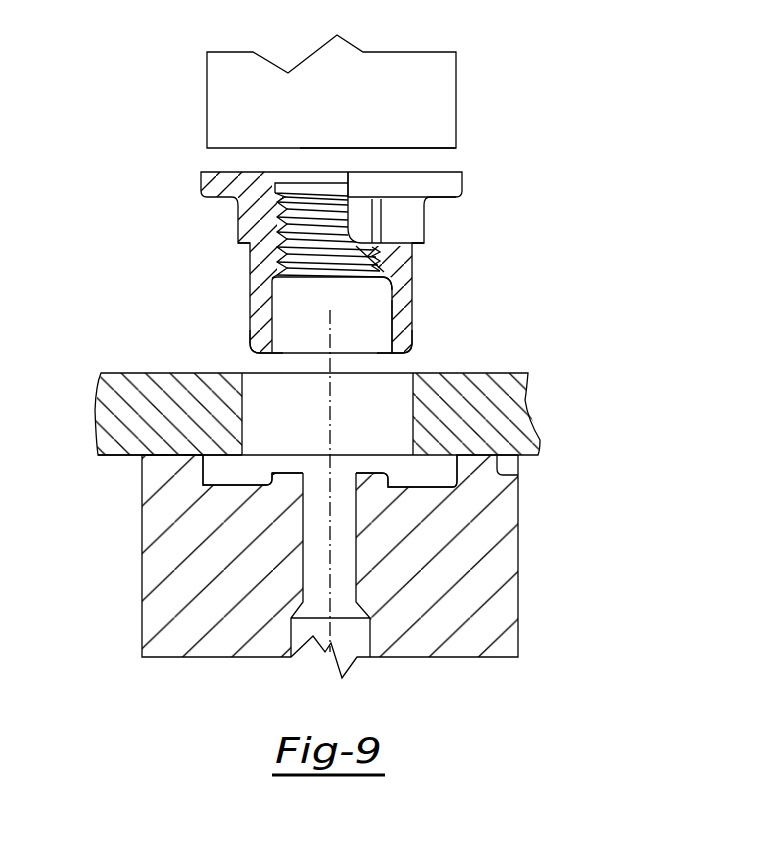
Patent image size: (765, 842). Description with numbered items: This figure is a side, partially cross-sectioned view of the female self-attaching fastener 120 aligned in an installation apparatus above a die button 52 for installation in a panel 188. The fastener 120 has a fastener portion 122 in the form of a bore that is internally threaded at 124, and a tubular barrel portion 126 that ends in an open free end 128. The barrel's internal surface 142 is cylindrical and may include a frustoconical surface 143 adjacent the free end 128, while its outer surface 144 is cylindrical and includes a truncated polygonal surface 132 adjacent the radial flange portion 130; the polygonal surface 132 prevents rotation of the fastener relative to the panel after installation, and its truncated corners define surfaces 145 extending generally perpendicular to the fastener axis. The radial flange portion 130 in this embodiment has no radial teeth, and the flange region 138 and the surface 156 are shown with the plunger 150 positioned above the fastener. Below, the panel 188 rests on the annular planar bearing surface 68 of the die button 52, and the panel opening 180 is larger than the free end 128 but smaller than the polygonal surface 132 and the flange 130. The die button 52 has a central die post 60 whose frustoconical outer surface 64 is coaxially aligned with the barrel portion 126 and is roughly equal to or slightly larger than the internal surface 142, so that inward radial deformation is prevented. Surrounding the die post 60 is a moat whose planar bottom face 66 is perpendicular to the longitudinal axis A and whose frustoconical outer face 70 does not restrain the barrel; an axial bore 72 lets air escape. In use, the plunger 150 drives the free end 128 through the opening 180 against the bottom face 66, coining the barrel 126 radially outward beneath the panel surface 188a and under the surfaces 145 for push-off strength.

The plunger 150 is at (445, 65).
The bottom surface of tool 156 is at (445, 150).
The flange 138 is at (212, 173).
The female self-attaching fastener 120 is at (482, 314).
The tubular barrel portion 126 is at (248, 280).
The radial flange portion 130 is at (453, 182).
The truncated polygonal surface 132 is at (408, 220).
The fastener portion 122 is at (304, 178).
The internal thread 124 is at (282, 216).
The radial surface 145 is at (247, 248).
The panel opening 180 is at (243, 398).
The internal surface 142 is at (395, 292).
The frustoconical surface 143 is at (352, 350).
The outer surface 144 is at (253, 348).
The open free end 128 is at (414, 354).
The panel 188 is at (143, 383).
The frustoconical side face 64 is at (270, 478).
The annular panel support face 68 is at (163, 455).
The panel surface 188a is at (497, 475).
The die button 52 is at (505, 598).
The annular bottom face 66 is at (241, 485).
The outer face of the moat 70 is at (452, 473).
The central die post 60 is at (370, 488).
The axial bore 72 is at (318, 573).
The longitudinal axis A is at (330, 655).